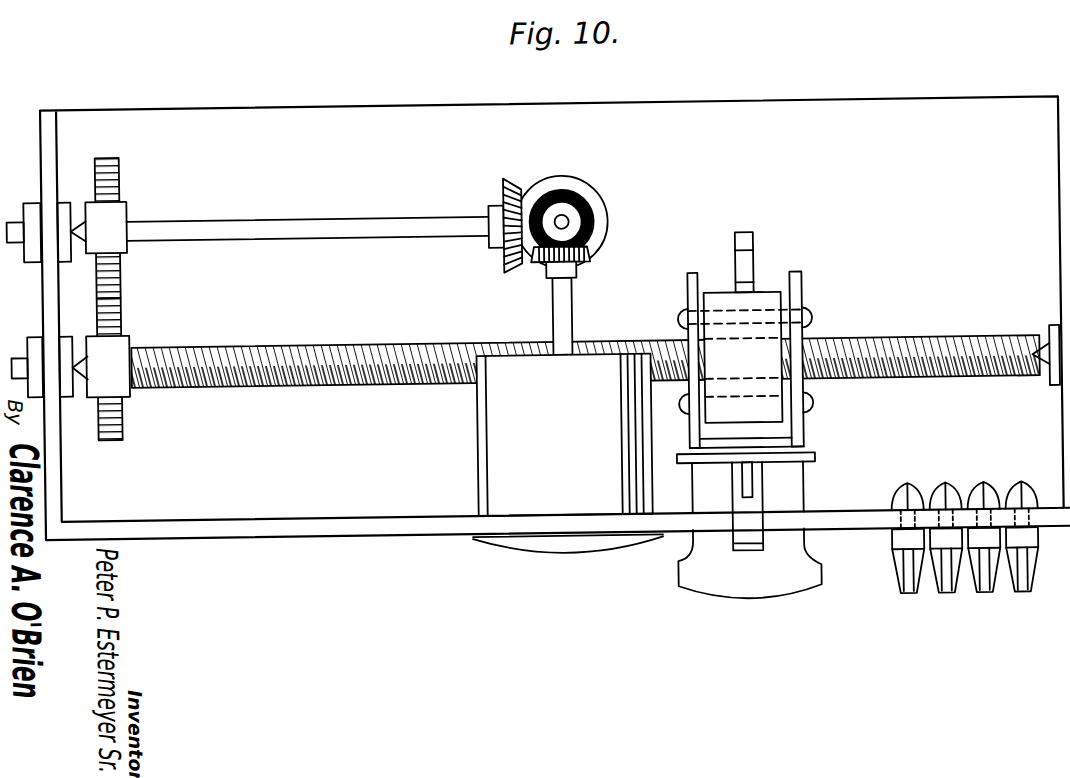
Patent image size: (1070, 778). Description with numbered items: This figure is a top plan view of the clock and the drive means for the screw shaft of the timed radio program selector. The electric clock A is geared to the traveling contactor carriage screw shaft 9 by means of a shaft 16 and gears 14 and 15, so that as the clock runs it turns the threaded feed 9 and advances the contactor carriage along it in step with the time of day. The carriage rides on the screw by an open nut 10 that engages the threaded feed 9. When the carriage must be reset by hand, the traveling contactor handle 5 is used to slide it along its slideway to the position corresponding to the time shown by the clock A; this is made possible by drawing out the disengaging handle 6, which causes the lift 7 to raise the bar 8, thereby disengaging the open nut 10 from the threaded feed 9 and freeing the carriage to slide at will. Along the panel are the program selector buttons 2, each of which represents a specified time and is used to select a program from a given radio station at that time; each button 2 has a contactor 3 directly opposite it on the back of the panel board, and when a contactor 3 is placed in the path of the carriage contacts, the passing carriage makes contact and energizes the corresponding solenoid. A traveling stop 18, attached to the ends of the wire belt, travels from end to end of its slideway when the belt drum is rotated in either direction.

The program selector buttons 2 is at (944, 602).
The contactor 3 is at (943, 492).
The traveling contactor handle 5 is at (770, 586).
The disengaging handle 6 is at (684, 618).
The lift 7 is at (412, 531).
The bar 8 is at (758, 243).
The screw shaft 9 is at (372, 346).
The open nut 10 is at (770, 334).
The gears 14 is at (122, 318).
The gears 15 is at (599, 250).
The shaft 16 is at (570, 311).
The traveling stop 18 is at (567, 222).
The electric clock A is at (500, 444).